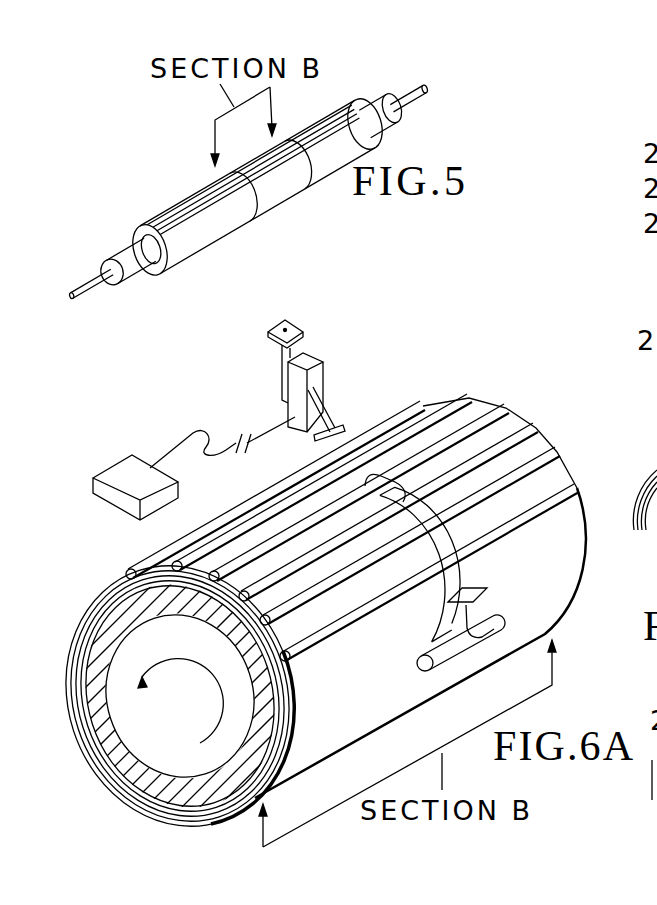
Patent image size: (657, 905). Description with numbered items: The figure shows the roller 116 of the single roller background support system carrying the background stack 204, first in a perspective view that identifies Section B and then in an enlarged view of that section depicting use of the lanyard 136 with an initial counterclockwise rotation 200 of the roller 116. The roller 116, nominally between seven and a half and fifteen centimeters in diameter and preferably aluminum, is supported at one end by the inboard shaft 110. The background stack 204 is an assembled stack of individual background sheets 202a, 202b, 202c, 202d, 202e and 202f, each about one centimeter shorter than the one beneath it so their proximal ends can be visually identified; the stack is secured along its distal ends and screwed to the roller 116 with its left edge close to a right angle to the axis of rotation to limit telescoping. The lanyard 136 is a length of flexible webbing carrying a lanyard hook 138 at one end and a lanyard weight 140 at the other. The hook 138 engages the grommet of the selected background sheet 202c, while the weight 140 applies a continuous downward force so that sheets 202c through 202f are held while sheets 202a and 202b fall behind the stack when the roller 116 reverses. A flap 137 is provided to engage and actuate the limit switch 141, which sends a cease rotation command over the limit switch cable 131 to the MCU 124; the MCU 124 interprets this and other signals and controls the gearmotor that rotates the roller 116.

In FIG. 5, the inboard shaft 110 is at (82, 293).
In FIG. 5, the roller 116 is at (105, 262).
In FIG. 6A, the roller 116 is at (135, 770).
In FIG. 5, the background stack 204 is at (156, 276).
In FIG. 6A, the background stack 204 is at (160, 822).
In FIG. 6A, the MCU 124 is at (120, 470).
In FIG. 6A, the limit switch cable 131 is at (195, 428).
In FIG. 6A, the limit switch 141 is at (317, 375).
In FIG. 6A, the lanyard hook 138 is at (366, 486).
In FIG. 6A, the band 136 is at (452, 557).
In FIG. 6A, the flap 137 is at (473, 592).
In FIG. 6A, the lanyard weight 140 is at (440, 658).
In FIG. 6A, the lumen / rotation direction 200 is at (227, 702).
In FIG. 6A, the background sheet 202a is at (422, 404).
In FIG. 6A, the background sheet 202b is at (466, 398).
In FIG. 6A, the background sheet 202c is at (505, 406).
In FIG. 6A, the background sheet 202d is at (535, 427).
In FIG. 6A, the background sheet 202e is at (557, 450).
In FIG. 6A, the background sheet 202f is at (577, 486).